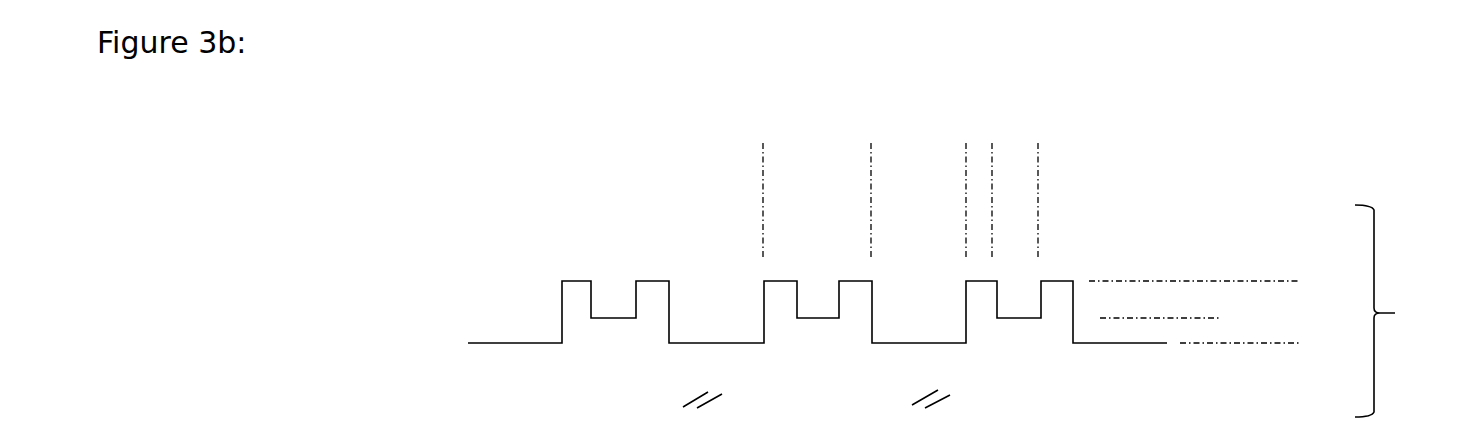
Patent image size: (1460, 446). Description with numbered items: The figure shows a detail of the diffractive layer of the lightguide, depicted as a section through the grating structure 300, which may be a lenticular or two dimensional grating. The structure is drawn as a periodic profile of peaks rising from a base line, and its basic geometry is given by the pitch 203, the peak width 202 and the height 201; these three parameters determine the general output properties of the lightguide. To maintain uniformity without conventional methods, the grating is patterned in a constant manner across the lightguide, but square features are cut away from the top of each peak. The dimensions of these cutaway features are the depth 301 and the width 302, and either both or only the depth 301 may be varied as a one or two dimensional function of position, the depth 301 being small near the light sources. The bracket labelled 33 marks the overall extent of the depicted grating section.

The grating structure 300 is at (566, 284).
The peak width 202 is at (861, 157).
The pitch 203 is at (773, 195).
The width of cutaway feature 302 is at (1029, 170).
The depth of cutaway feature 301 is at (1154, 309).
The height 201 is at (1261, 290).
The structured region 33 is at (1396, 311).